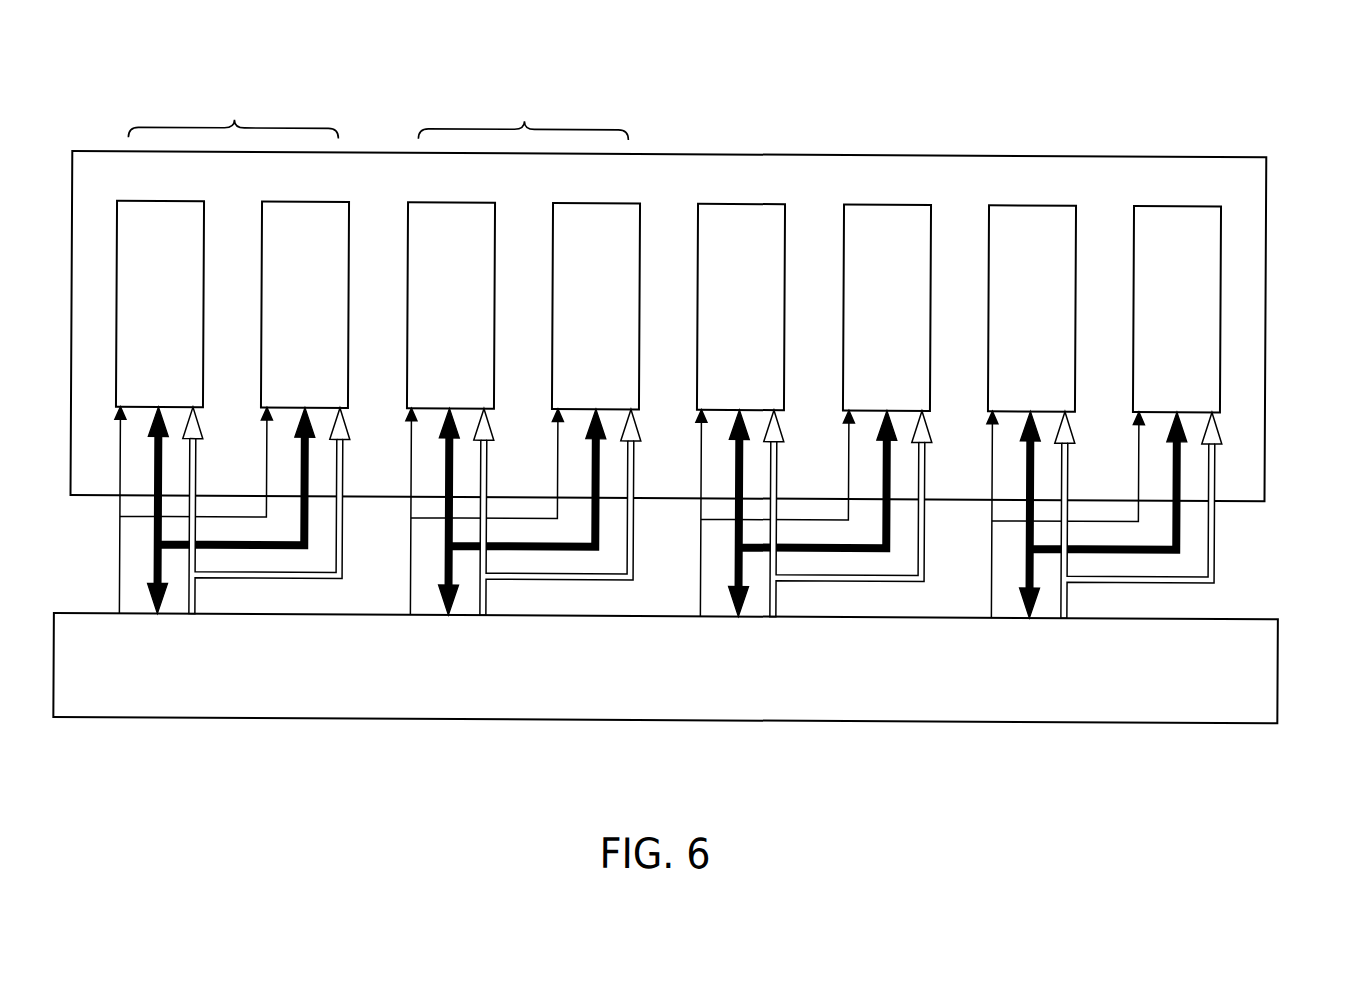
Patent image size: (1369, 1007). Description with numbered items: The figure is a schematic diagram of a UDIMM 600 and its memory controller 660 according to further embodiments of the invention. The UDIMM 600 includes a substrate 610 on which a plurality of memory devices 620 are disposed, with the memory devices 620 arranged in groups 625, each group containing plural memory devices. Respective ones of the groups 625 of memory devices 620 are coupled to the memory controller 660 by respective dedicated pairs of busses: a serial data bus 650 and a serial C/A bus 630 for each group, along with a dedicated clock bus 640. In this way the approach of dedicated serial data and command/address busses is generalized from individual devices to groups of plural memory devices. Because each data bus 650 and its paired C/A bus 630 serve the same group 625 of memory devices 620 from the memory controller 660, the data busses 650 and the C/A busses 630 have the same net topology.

The UDIMM 600 is at (1192, 80).
The substrate 610 is at (1265, 206).
The memory device 620 is at (160, 200).
The group of memory devices 625 is at (378, 117).
The serial C/A bus 630 is at (343, 537).
The clock bus 640 is at (120, 533).
The serial data bus 650 is at (152, 562).
The memory controller 660 is at (1279, 664).